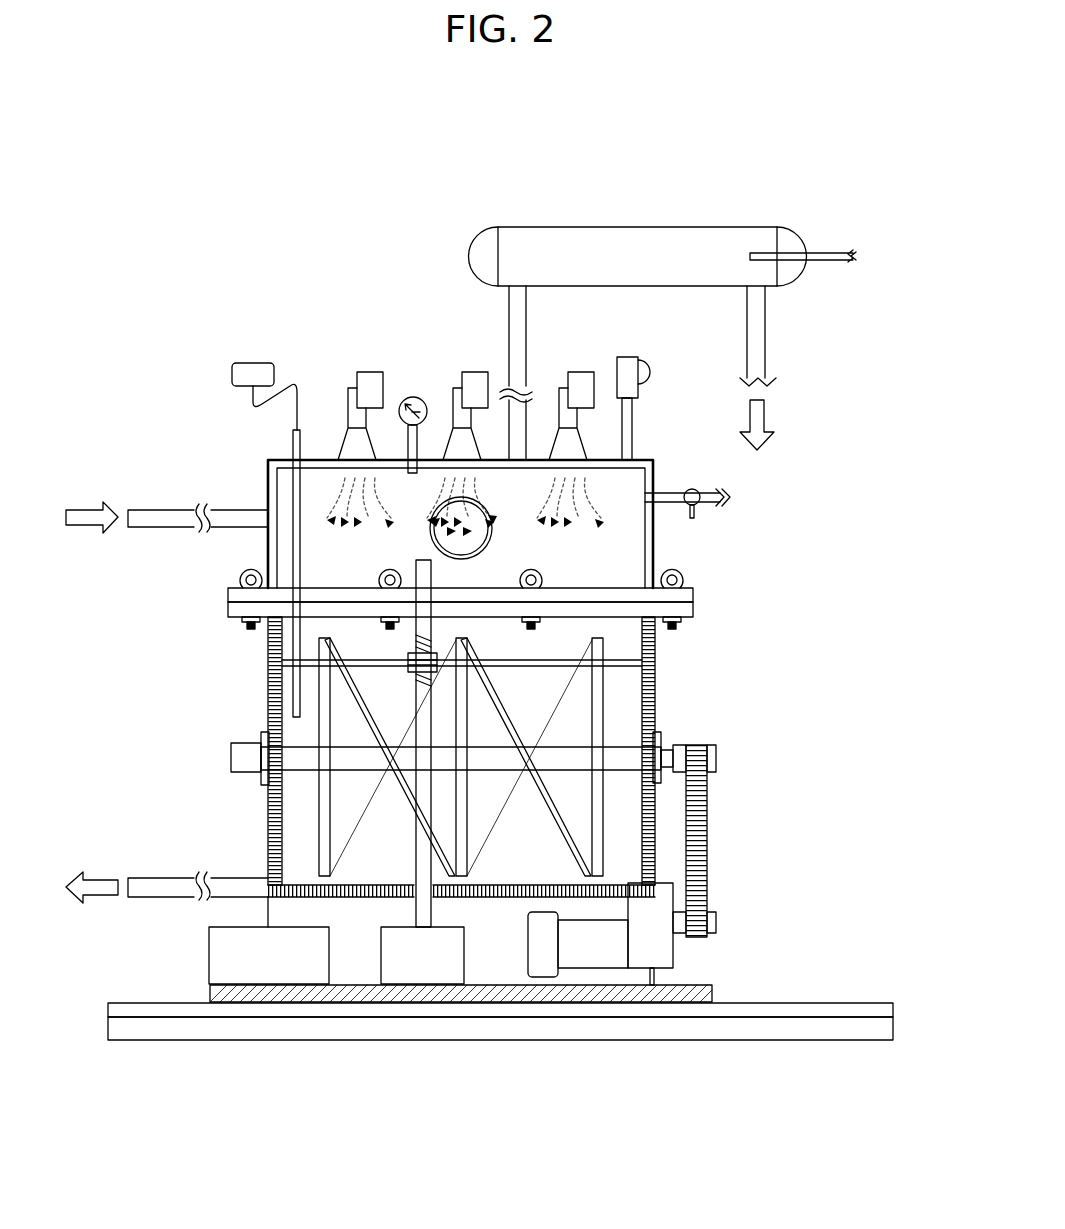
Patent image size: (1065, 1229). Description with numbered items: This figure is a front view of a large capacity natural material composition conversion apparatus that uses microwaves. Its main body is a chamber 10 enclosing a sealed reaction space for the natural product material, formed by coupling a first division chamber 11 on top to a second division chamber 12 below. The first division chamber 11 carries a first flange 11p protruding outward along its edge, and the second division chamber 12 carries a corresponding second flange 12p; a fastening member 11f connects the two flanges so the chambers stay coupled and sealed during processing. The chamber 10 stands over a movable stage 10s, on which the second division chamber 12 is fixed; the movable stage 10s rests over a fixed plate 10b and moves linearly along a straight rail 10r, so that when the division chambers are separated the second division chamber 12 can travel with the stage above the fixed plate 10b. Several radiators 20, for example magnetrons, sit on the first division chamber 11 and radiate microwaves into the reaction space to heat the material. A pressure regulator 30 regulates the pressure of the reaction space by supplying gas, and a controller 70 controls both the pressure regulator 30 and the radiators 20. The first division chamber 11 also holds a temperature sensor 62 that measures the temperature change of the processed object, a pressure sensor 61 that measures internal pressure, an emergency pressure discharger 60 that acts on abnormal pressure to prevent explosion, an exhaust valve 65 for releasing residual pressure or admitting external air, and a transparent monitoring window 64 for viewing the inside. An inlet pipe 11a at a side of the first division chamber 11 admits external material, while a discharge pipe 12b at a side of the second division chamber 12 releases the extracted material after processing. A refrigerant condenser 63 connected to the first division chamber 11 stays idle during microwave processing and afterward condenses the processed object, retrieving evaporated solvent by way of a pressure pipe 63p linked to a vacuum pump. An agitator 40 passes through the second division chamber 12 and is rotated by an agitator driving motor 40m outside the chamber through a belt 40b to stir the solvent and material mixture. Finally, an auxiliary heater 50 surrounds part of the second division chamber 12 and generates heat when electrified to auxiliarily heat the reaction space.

The chamber 10 is at (757, 540).
The first division chamber 11 is at (655, 548).
The second division chamber 12 is at (655, 652).
The inlet pipe 11a is at (147, 512).
The first flange 11p is at (228, 594).
The second flange 12p is at (228, 610).
The fastening member 11f is at (247, 629).
The discharge pipe 12b is at (150, 882).
The fixed plate 10b is at (140, 1030).
The movable stage 10s is at (245, 993).
The straight rail 10r is at (327, 1012).
The radiator 20 is at (372, 372).
The pressure regulator 30 is at (423, 970).
The agitator 40 is at (580, 707).
The belt 40b is at (700, 838).
The agitator driving motor 40m is at (592, 958).
The auxiliary heater 50 is at (270, 810).
The emergency pressure discharger 60 is at (620, 357).
The pressure sensor 61 is at (414, 397).
The temperature sensor 62 is at (253, 363).
The refrigerant condenser 63 is at (637, 232).
The pressure pipe 63p is at (828, 253).
The monitoring window 64 is at (480, 541).
The exhaust valve 65 is at (675, 493).
The controller 70 is at (215, 957).